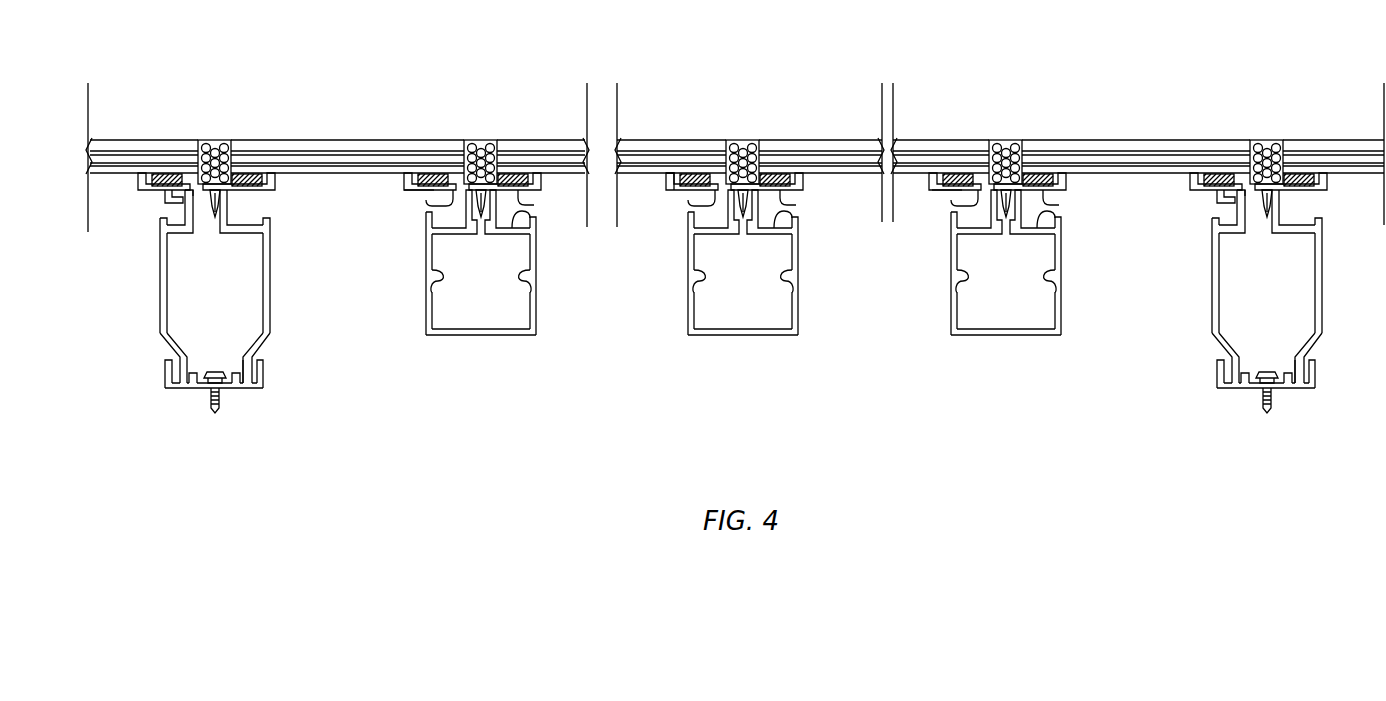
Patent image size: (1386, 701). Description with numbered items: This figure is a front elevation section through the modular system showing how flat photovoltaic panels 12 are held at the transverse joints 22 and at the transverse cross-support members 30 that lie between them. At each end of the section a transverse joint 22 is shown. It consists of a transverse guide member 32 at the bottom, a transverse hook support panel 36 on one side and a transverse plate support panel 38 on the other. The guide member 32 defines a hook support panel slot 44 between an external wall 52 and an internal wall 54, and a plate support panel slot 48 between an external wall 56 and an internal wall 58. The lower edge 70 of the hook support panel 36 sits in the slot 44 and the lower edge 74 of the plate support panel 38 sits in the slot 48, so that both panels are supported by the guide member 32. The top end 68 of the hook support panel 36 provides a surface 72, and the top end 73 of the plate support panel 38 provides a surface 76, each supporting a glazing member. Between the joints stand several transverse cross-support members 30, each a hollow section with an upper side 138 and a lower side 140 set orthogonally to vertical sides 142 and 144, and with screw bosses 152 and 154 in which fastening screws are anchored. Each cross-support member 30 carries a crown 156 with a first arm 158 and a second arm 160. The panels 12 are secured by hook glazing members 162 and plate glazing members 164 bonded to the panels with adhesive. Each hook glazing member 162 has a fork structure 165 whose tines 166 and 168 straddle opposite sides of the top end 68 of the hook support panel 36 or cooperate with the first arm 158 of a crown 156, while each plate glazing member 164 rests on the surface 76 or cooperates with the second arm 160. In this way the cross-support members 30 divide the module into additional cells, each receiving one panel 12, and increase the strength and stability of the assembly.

The photovoltaic panel 12 is at (807, 141).
The transverse joint 22 is at (739, 268).
The transverse cross-support member 30 is at (737, 310).
The transverse guide member 32 is at (165, 387).
The transverse hook support panel 36 is at (160, 295).
The transverse plate support panel 38 is at (270, 295).
The hook support panel slot 44 is at (176, 383).
The plate support panel slot 48 is at (262, 357).
The external wall 52 is at (165, 367).
The internal wall 54 is at (193, 375).
The external wall 56 is at (263, 367).
The internal wall 58 is at (235, 375).
The top end 68 is at (160, 216).
The lower edge 70 is at (183, 387).
The surface 72 is at (187, 188).
The top end 73 is at (227, 212).
The lower edge 74 is at (250, 370).
The surface 76 is at (257, 184).
The upper side 138 is at (512, 226).
The lower side 140 is at (487, 336).
The vertical side 142 is at (426, 320).
The vertical side 144 is at (536, 260).
The screw boss 152 is at (440, 280).
The screw boss 154 is at (520, 278).
The crown 156 is at (466, 212).
The first arm 158 is at (450, 204).
The second arm 160 is at (520, 203).
The hook glazing member 162 is at (418, 175).
The plate glazing member 164 is at (243, 172).
The fork structure 165 is at (697, 196).
The tine 166 is at (168, 186).
The tine 168 is at (167, 205).